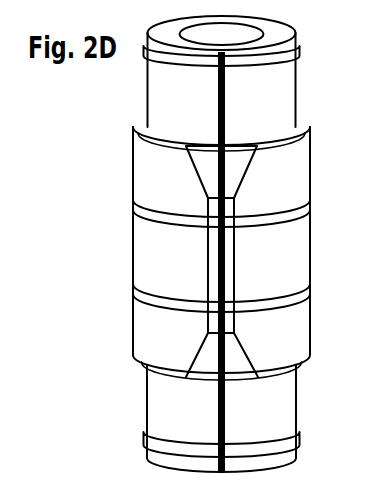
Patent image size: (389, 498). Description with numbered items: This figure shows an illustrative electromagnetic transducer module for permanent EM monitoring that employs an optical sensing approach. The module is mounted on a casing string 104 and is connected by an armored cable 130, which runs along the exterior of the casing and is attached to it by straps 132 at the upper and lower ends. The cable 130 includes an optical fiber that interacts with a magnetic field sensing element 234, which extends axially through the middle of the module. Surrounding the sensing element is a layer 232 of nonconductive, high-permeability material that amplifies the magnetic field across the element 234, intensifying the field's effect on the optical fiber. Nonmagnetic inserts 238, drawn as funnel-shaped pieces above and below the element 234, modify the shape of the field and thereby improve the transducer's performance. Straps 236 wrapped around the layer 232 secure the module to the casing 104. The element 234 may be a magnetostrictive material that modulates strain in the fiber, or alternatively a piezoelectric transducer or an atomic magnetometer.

The casing string 104 is at (148, 105).
The armored cable 130 is at (226, 94).
The straps 132 is at (298, 58).
The layer of nonconductive, high-permeability material 232 is at (133, 164).
The magnetic field sensing element 234 is at (208, 265).
The straps 236 is at (133, 206).
The nonmagnetic inserts 238 is at (201, 180).